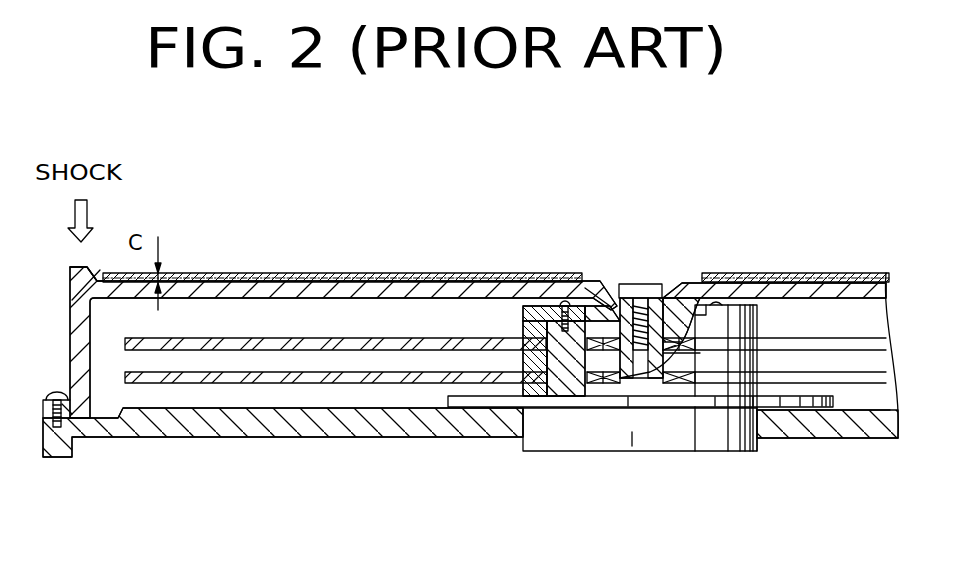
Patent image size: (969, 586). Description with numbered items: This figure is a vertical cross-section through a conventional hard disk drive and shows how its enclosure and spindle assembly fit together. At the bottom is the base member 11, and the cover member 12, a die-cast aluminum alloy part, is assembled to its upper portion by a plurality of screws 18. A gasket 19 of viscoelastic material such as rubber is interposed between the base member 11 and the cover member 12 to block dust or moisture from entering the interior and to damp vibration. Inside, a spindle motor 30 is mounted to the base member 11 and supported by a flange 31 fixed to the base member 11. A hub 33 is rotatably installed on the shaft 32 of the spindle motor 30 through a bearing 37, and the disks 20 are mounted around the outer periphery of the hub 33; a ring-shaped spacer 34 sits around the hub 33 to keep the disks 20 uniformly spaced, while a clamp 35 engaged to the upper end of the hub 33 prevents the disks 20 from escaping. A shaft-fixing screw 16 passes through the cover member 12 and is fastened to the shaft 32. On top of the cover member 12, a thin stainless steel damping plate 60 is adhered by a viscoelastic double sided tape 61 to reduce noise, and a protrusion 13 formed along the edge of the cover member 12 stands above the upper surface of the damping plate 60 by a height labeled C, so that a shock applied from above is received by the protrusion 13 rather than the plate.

The base member 11 is at (45, 437).
The cover member 12 is at (70, 310).
The protrusion 13 is at (72, 268).
The shaft-fixing screw 16 is at (641, 283).
The screws 18 is at (52, 396).
The gasket 19 is at (78, 413).
The disks 20 is at (348, 383).
The spindle motor 30 is at (668, 456).
The flange 31 is at (460, 403).
The shaft 32 is at (672, 300).
The hub 33 is at (570, 380).
The ring-shaped spacer 34 is at (510, 340).
The clamp 35 is at (542, 310).
The bearing 37 is at (606, 297).
The damping plate 60 is at (312, 282).
The double sided tape 61 is at (386, 282).